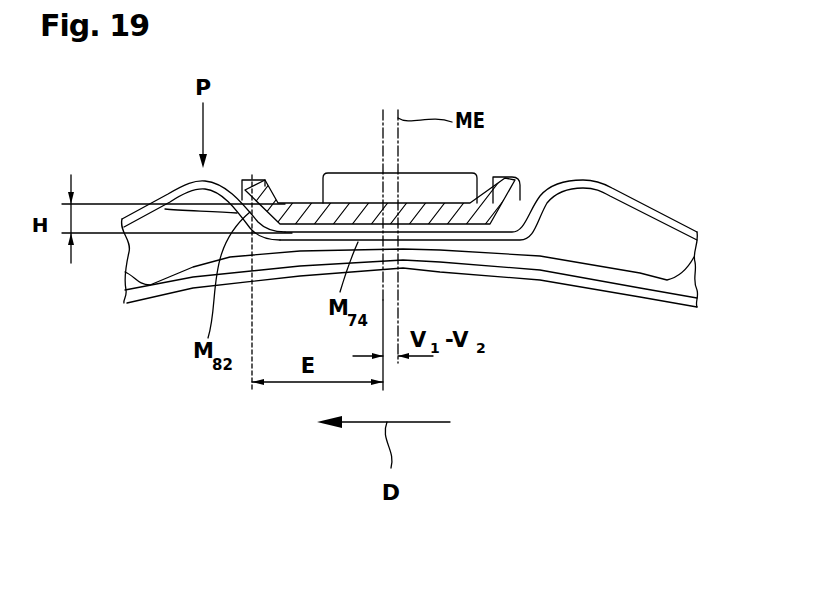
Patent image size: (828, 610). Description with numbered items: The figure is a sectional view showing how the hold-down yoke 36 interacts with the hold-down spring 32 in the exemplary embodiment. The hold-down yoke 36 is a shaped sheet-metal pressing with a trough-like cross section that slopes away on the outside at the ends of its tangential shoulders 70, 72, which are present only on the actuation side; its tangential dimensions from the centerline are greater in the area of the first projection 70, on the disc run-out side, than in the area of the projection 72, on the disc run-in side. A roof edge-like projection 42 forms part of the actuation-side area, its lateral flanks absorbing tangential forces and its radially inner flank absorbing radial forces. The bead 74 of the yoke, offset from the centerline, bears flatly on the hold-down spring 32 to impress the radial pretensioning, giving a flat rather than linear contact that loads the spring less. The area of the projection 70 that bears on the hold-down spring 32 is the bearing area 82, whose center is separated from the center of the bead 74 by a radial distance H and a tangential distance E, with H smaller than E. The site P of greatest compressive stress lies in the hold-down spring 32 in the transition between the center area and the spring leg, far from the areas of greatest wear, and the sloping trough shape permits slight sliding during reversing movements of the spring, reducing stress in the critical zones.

The hold-down spring 32 is at (590, 183).
The hold-down yoke 36 is at (388, 209).
The projection 42 is at (357, 182).
The tangential shoulder 70 is at (262, 180).
The tangential shoulder 72 is at (512, 178).
The bead 74 is at (420, 233).
The bearing area of the projection 82 is at (174, 190).